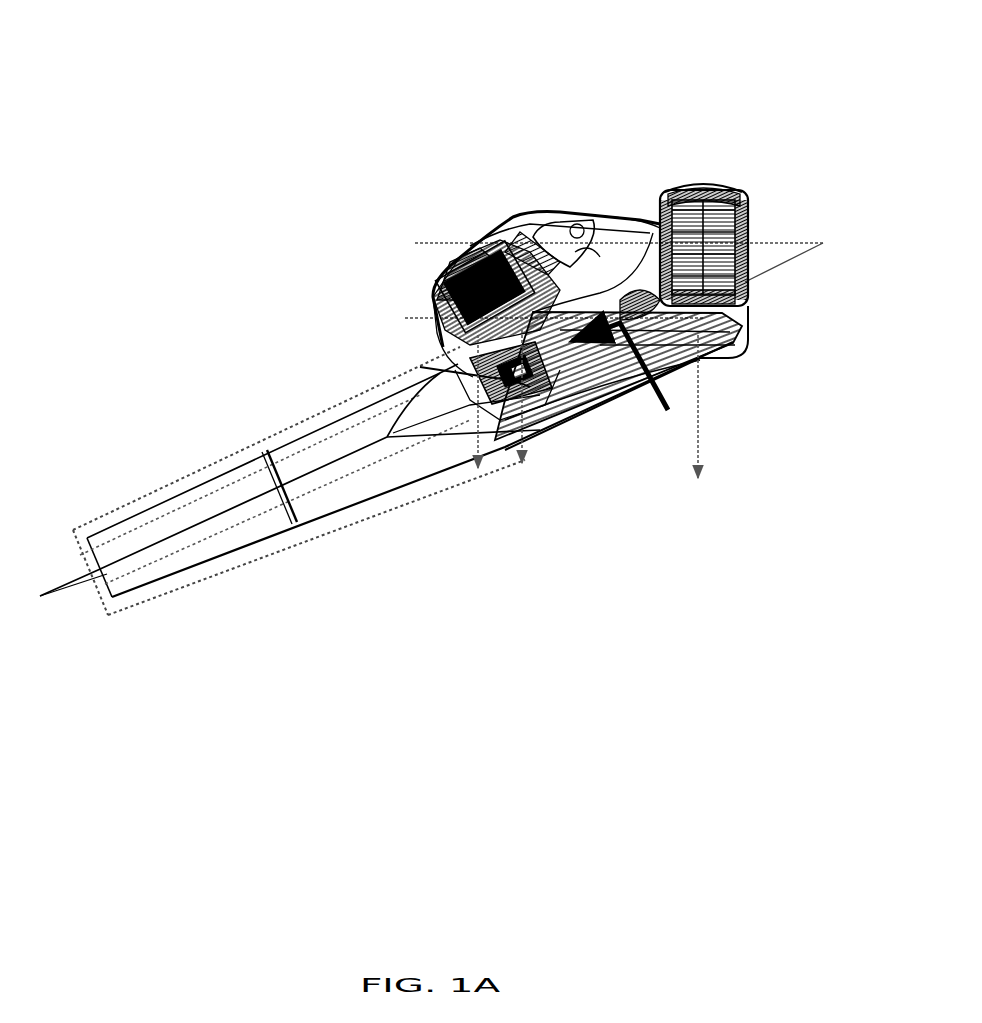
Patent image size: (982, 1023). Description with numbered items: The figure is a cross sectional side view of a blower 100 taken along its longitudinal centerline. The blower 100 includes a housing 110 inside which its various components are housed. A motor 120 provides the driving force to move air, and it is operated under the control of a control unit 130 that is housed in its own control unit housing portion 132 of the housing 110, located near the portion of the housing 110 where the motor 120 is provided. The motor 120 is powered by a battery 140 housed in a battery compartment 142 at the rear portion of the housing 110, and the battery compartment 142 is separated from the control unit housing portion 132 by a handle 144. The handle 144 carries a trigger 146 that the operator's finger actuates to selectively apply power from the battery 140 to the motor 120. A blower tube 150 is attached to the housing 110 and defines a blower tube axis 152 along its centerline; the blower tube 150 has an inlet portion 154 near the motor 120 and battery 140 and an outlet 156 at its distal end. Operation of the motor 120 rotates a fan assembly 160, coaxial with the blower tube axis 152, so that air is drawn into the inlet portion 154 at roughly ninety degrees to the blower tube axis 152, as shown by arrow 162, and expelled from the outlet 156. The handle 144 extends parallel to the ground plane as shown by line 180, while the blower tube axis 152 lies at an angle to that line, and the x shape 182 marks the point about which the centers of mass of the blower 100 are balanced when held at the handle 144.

The blower 100 is at (221, 93).
The housing 110 is at (576, 288).
The motor 120 is at (443, 389).
The control unit 130 is at (434, 287).
The control unit housing portion 132 is at (436, 274).
The battery 140 is at (750, 207).
The battery compartment 142 is at (719, 215).
The handle 144 is at (640, 196).
The trigger 146 is at (531, 209).
The blower tube 150 is at (403, 478).
The blower tube axis 152 is at (213, 514).
The inlet portion 154 is at (609, 414).
The outlet 156 is at (67, 612).
The fan assembly 160 is at (600, 469).
The arrow 162 is at (665, 397).
The line 180 is at (597, 252).
The x shape 182 is at (556, 179).